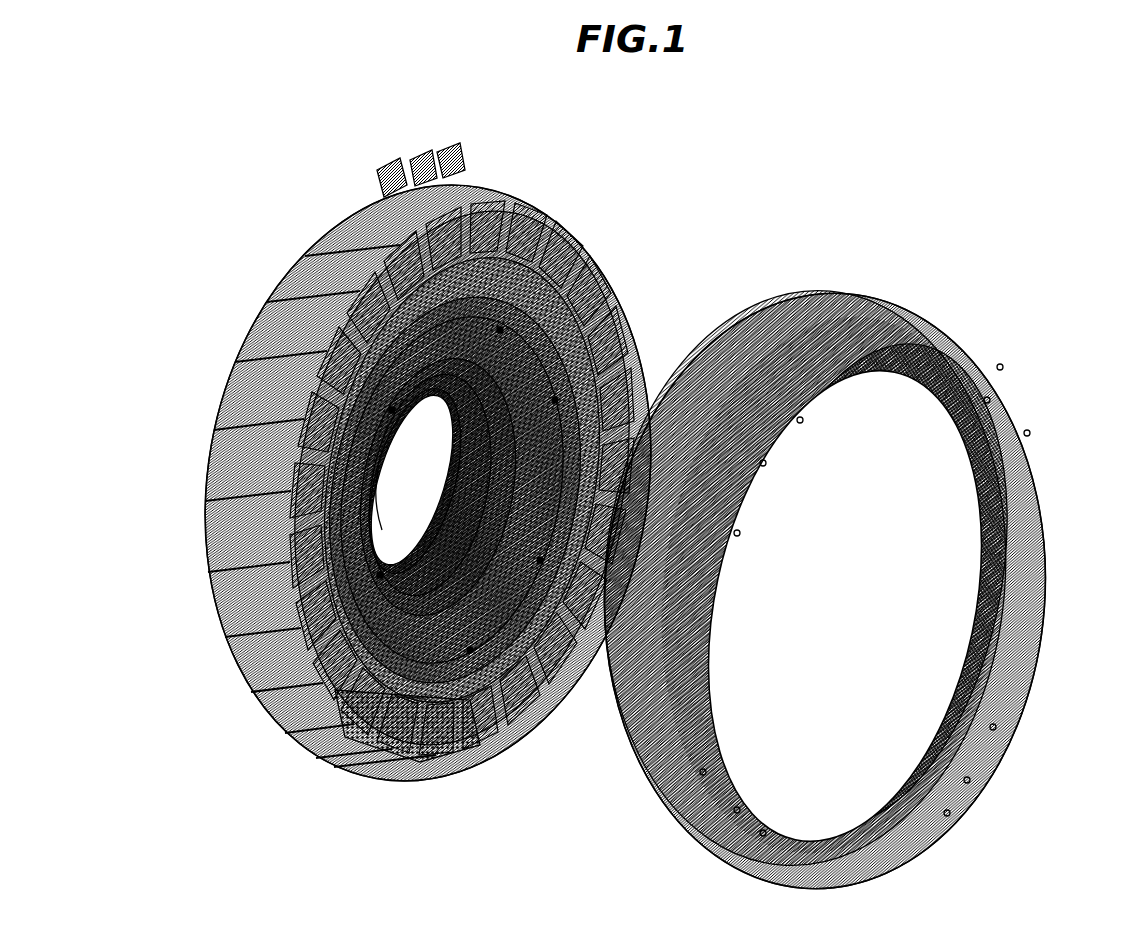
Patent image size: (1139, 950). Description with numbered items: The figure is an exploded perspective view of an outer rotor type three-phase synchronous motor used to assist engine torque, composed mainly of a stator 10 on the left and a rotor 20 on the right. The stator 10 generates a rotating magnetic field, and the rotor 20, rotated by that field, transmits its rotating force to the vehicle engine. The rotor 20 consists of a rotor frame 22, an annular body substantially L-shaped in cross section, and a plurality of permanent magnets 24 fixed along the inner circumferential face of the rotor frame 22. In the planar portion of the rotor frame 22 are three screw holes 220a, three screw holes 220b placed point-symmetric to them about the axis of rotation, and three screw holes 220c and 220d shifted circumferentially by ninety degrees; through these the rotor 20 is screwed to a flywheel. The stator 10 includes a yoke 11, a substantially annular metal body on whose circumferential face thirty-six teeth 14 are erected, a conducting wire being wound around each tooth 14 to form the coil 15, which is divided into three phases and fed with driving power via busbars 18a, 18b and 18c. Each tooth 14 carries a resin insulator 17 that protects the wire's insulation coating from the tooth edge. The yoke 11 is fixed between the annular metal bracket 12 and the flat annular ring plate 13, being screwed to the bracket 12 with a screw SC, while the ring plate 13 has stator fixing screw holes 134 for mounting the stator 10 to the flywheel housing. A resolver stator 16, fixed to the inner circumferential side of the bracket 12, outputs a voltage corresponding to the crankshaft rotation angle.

The stator 10 is at (571, 216).
The yoke 11 is at (530, 697).
The bracket 12 is at (477, 717).
The ring plate 13 is at (355, 747).
The teeth 14 is at (270, 320).
The coil 15 is at (243, 373).
The resolver stator 16 is at (617, 310).
The insulator 17 is at (323, 243).
The busbar 18a is at (380, 162).
The busbar 18b is at (420, 152).
The busbar 18c is at (463, 147).
The stator fixing screw holes 134 is at (385, 440).
The screw SC is at (377, 498).
The rotor 20 is at (980, 282).
The rotor frame 22 is at (857, 300).
The permanent magnets 24 is at (937, 682).
The screw holes 220a is at (737, 533).
The screw holes 220b is at (947, 813).
The screw holes 220c is at (1027, 433).
The screw holes 220d is at (763, 833).